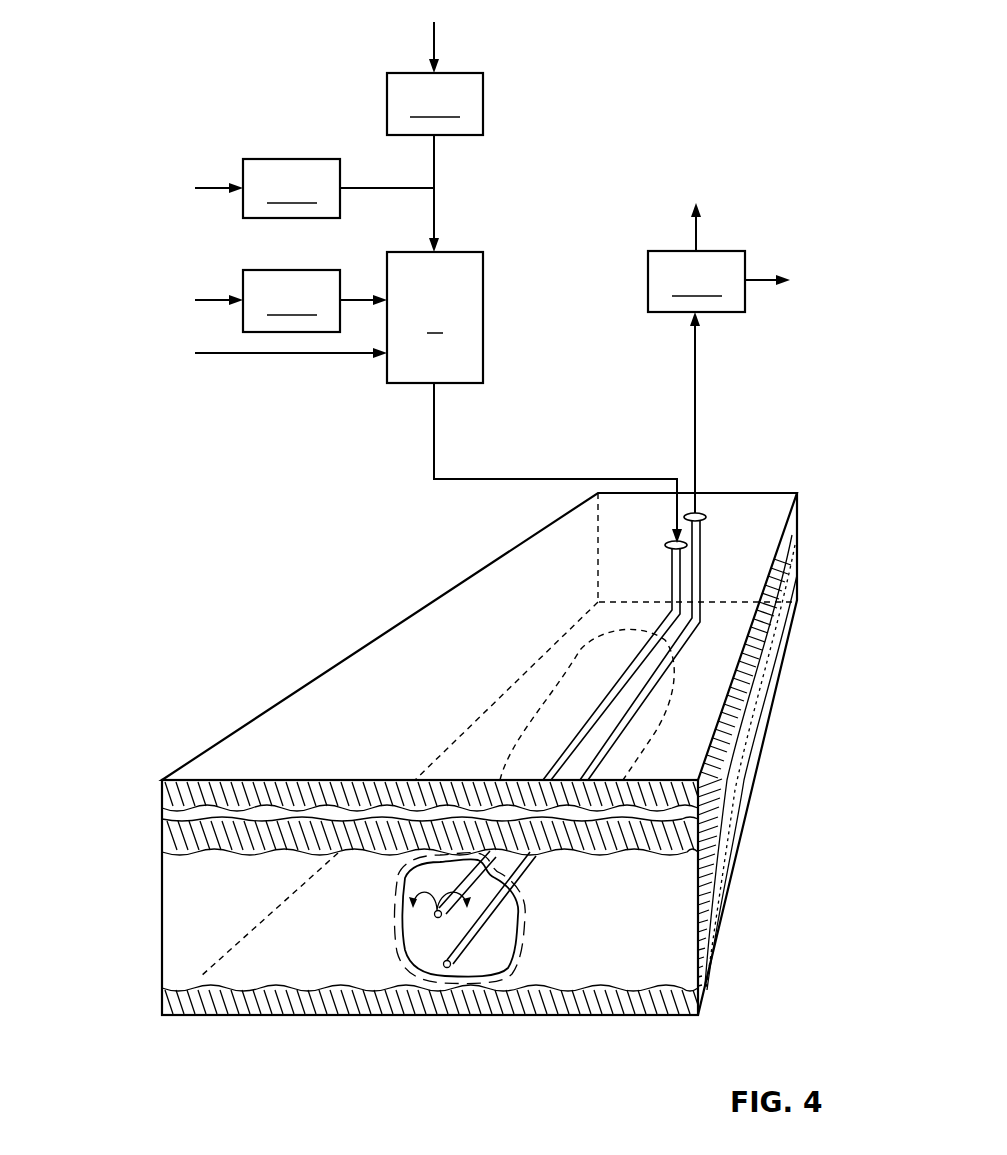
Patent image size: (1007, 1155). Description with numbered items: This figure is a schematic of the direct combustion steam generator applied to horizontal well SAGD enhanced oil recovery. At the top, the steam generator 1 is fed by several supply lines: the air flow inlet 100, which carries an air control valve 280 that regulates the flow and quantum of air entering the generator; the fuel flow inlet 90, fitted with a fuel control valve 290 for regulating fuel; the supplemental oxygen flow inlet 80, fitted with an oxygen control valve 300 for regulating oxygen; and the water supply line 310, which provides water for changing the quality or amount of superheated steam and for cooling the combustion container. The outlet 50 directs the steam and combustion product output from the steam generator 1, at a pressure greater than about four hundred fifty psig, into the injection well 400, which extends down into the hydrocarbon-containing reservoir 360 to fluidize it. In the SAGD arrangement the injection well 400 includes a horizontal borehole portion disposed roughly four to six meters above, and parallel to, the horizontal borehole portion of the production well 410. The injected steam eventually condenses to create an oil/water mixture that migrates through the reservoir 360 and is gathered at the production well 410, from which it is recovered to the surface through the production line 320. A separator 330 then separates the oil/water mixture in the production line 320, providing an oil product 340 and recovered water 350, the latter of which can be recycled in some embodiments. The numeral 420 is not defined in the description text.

The steam generator 1 is at (435, 317).
The outlet 50 is at (434, 399).
The supplemental oxygen flow inlet 80 is at (220, 304).
The fuel flow inlet 90 is at (220, 192).
The air flow inlet 100 is at (434, 36).
The air control valve 280 is at (435, 162).
The fuel control valve 290 is at (338, 188).
The oxygen control valve 300 is at (315, 301).
The water supply line 310 is at (260, 355).
The production line 320 is at (695, 379).
The separator 330 is at (696, 281).
The oil product 340 is at (696, 233).
The recovered water 350 is at (763, 282).
The hydrocarbon-containing reservoir 360 is at (180, 917).
The injection well 400 is at (673, 570).
The production well 410 is at (703, 552).
The cavity 420 is at (462, 935).